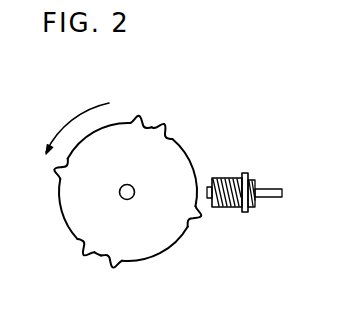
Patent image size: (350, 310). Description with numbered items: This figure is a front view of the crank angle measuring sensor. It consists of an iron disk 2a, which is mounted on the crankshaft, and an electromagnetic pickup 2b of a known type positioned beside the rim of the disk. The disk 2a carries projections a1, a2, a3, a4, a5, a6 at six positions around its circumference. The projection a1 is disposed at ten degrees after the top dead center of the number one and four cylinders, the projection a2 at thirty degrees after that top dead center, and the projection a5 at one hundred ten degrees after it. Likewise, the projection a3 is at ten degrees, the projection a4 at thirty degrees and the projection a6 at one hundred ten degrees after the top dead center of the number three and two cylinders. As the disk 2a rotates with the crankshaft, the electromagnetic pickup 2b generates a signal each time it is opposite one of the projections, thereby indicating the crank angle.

The iron disk 2a is at (126, 187).
The electromagnetic pickup 2b is at (236, 177).
The projection a1 is at (137, 115).
The projection a2 is at (170, 131).
The projection a3 is at (118, 267).
The projection a4 is at (80, 249).
The projection a5 is at (197, 228).
The projection a6 is at (54, 174).